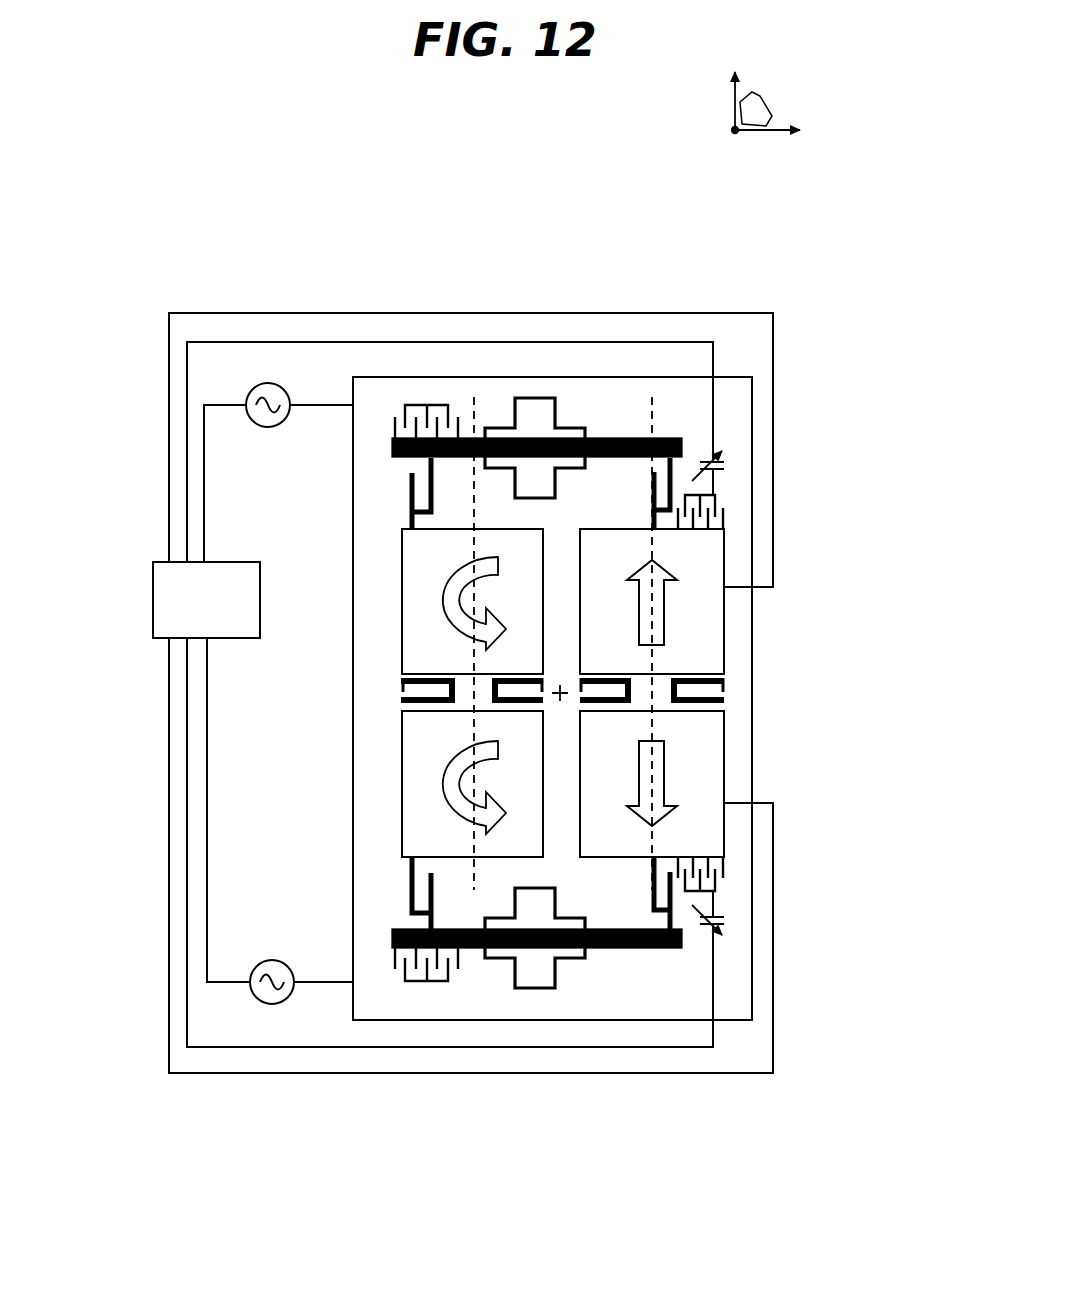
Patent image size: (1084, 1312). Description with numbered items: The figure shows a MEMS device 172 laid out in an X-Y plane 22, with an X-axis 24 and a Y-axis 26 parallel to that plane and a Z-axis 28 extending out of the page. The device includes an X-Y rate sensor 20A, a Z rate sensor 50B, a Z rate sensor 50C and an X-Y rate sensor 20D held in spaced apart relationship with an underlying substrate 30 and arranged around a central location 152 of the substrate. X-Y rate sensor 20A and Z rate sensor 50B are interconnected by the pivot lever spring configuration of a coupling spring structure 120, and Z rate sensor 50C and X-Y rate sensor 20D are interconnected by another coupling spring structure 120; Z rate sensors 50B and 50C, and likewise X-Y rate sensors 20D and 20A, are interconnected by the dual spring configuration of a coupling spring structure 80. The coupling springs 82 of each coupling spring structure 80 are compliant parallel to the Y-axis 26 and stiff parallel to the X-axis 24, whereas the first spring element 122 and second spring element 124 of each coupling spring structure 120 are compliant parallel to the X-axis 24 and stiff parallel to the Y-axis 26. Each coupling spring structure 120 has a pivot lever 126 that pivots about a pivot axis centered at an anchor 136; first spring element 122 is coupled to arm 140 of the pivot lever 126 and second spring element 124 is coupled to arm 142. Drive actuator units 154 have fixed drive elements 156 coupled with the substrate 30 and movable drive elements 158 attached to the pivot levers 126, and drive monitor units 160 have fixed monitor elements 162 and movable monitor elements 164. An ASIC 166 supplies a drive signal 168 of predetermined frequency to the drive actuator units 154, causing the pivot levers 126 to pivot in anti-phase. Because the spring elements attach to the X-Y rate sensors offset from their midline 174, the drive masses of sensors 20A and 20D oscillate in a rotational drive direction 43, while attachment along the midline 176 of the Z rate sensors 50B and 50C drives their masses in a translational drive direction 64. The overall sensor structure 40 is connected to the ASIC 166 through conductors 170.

The X-Y plane 22 is at (772, 100).
The X-axis 24 is at (786, 122).
The Y-axis 26 is at (732, 74).
The Z-axis 28 is at (735, 140).
The substrate 30 is at (353, 724).
The inertial sensor structure 40 is at (683, 411).
The rotational drive direction 43 is at (470, 570).
The translational drive direction 64 is at (660, 600).
The coupling spring structure 80 is at (571, 694).
The coupling springs 82 is at (420, 708).
The coupling spring structure 120 is at (535, 384).
The first spring element 122 is at (410, 490).
The second spring element 124 is at (519, 629).
The pivot lever 126 is at (390, 447).
The anchor 136 is at (541, 443).
The arm 140 is at (482, 418).
The arm 142 is at (634, 437).
The central location 152 is at (563, 688).
The drive actuator unit 154 is at (353, 687).
The fixed drive element 156 is at (405, 412).
The movable drive element 158 is at (394, 440).
The drive monitor unit 160 is at (736, 476).
The fixed monitor element 162 is at (720, 500).
The movable monitor element 164 is at (772, 718).
The ASIC 166 is at (153, 600).
The drive signal 168 is at (284, 388).
The conductors 170 is at (169, 438).
The MEMS device 172 is at (552, 775).
The midline 174 is at (474, 540).
The midline 176 is at (650, 540).
The X-Y rate sensor 20A is at (402, 586).
The X-Y rate sensor 20D is at (402, 808).
The Z rate sensor 50B is at (706, 602).
The Z rate sensor 50C is at (726, 792).